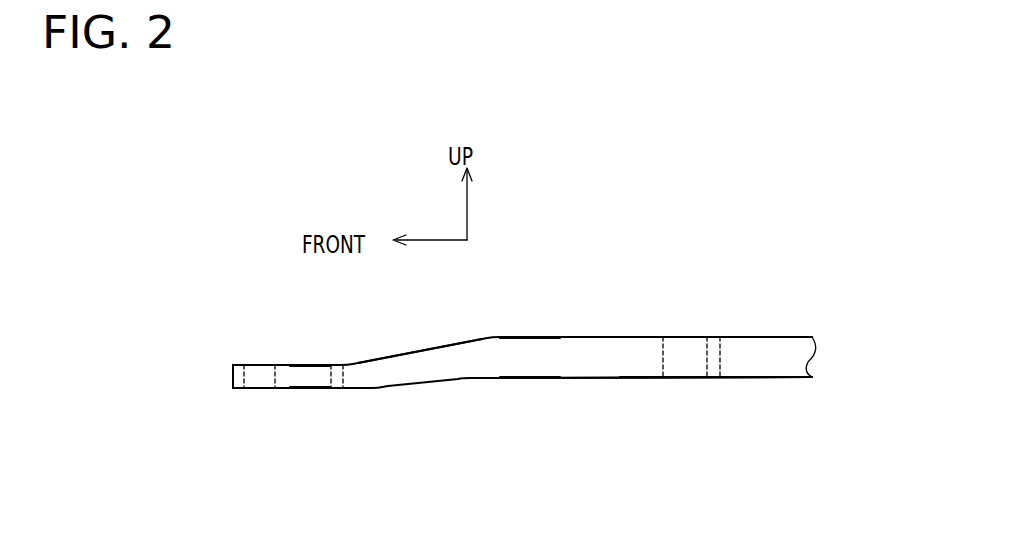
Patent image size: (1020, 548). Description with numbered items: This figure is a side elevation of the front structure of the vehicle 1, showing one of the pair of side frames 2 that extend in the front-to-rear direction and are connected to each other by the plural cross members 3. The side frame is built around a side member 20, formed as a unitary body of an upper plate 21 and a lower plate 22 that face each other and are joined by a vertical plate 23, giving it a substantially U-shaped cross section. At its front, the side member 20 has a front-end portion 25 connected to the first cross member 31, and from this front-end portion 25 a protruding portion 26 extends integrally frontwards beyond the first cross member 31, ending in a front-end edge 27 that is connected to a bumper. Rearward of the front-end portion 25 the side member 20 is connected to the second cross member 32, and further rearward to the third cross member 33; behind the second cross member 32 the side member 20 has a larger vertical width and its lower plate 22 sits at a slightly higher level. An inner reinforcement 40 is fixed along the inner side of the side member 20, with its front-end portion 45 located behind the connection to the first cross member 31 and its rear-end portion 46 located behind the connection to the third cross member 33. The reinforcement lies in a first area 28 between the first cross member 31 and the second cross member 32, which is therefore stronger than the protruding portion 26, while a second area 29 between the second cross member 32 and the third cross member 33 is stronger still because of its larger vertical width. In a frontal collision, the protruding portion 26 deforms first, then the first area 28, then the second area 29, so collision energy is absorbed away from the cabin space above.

The vehicle 1 is at (485, 364).
The side frame 2 is at (623, 337).
The cross member 3 is at (457, 404).
The side member 20 is at (642, 347).
The upper plate 21 is at (592, 337).
The lower plate 22 is at (588, 378).
The vertical plate 23 is at (530, 362).
The front-end portion 25 is at (261, 365).
The protruding portion 26 is at (239, 365).
The front-end edge 27 is at (233, 370).
The first area 28 is at (305, 372).
The second area 29 is at (473, 357).
The first cross member 31 is at (236, 388).
The second cross member 32 is at (325, 390).
The third cross member 33 is at (707, 355).
The inner reinforcement 40 is at (509, 412).
The front-end portion 45 is at (277, 378).
The rear-end portion 46 is at (720, 355).